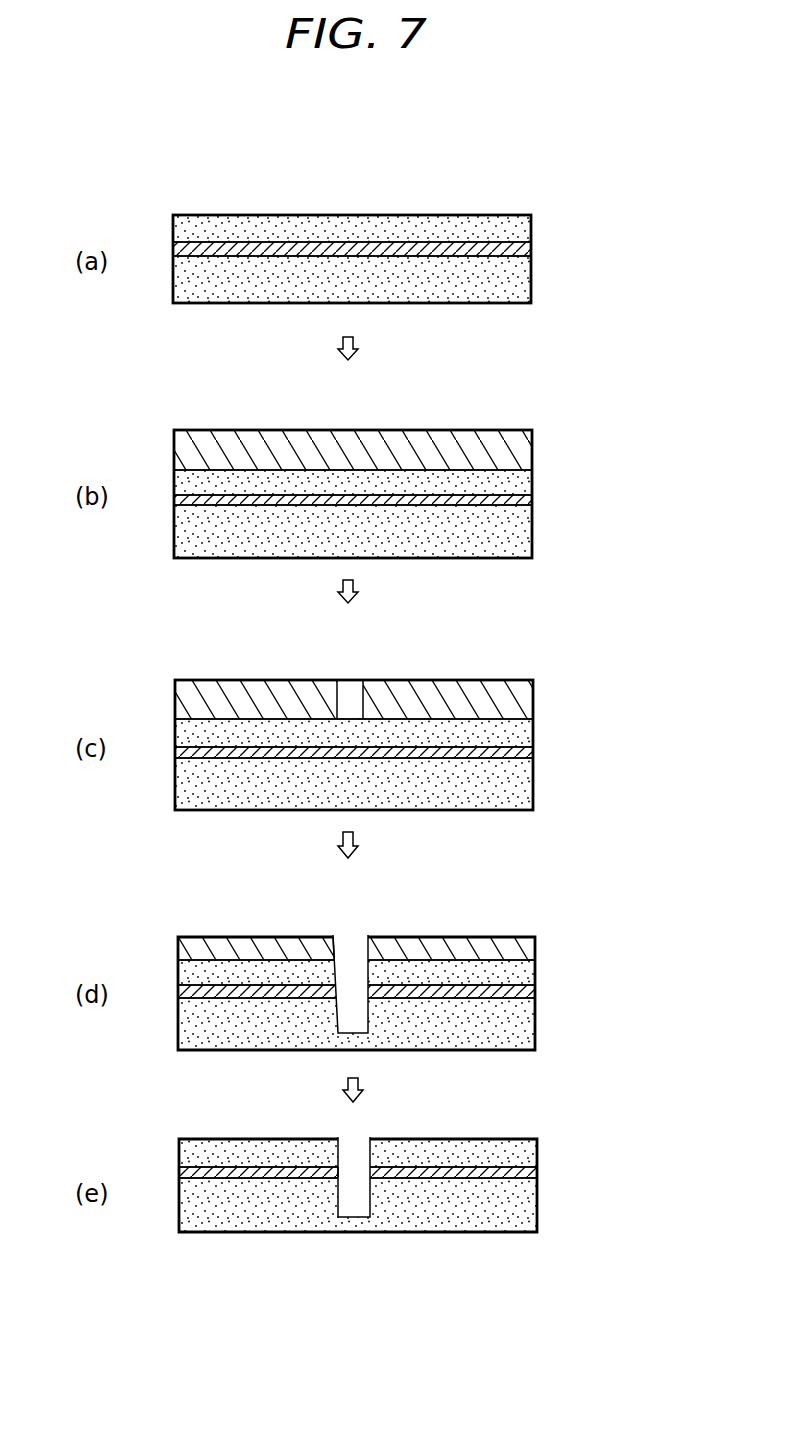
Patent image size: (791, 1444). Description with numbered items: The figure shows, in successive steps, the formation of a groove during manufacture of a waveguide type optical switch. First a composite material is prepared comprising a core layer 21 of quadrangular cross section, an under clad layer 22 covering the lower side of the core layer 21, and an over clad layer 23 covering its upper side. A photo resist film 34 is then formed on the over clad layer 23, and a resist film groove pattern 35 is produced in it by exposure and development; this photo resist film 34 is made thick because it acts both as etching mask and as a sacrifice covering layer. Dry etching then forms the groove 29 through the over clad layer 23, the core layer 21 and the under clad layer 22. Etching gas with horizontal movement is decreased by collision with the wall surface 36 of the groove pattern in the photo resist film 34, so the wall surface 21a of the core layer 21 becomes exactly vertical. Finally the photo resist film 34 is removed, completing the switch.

The core layer 21 is at (415, 695).
The under clad layer 22 is at (397, 664).
The over clad layer 23 is at (397, 629).
The photo resist film 34 is at (444, 648).
The resist film groove pattern 35 is at (314, 761).
The wall surface 36 is at (274, 900).
The groove 29 is at (353, 990).
The wall surface 21a is at (306, 1246).